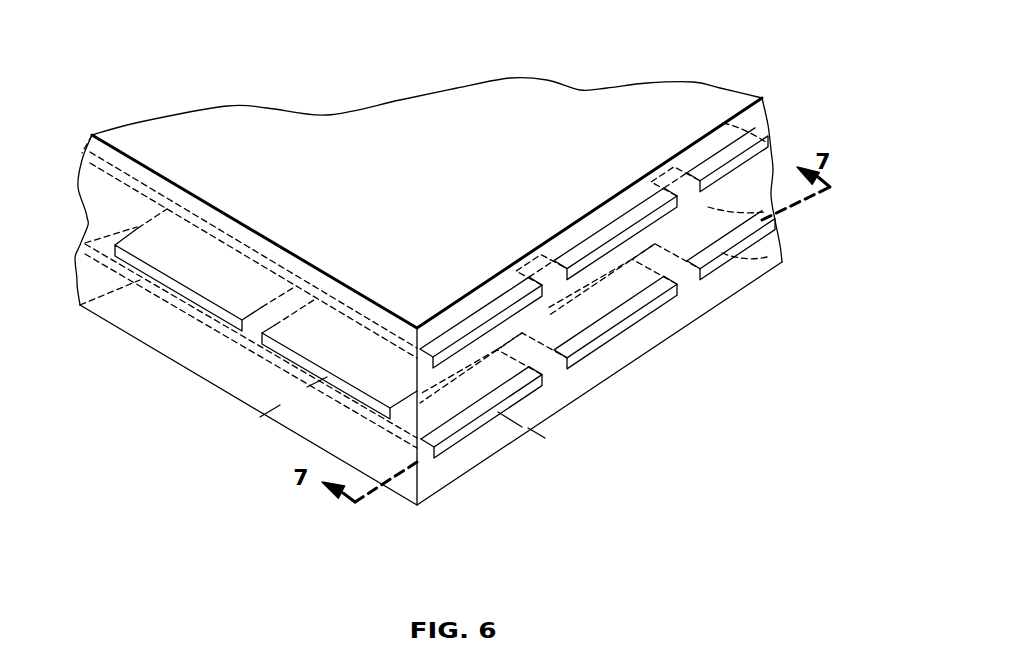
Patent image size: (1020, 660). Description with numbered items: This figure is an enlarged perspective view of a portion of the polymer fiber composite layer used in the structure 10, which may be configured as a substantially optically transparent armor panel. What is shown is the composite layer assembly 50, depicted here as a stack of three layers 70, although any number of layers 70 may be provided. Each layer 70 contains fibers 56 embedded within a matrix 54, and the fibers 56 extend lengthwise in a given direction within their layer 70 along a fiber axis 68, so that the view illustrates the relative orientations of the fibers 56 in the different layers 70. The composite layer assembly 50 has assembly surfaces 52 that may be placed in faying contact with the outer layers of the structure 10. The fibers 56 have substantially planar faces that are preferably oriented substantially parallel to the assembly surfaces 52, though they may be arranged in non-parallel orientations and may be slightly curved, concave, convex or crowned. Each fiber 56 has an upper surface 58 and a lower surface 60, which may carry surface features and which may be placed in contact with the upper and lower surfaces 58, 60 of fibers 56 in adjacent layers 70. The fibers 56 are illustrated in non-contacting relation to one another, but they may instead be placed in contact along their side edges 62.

The structure 10 is at (112, 128).
The composite layer assembly 50 is at (458, 85).
The assembly surfaces 52 is at (597, 107).
The matrix 54 is at (157, 325).
The fibers 56 is at (707, 253).
The upper surface 58 is at (457, 410).
The lower surface 60 is at (445, 455).
The side edges 62 is at (542, 375).
The fiber axis 68 is at (278, 408).
The layers 70 is at (757, 223).